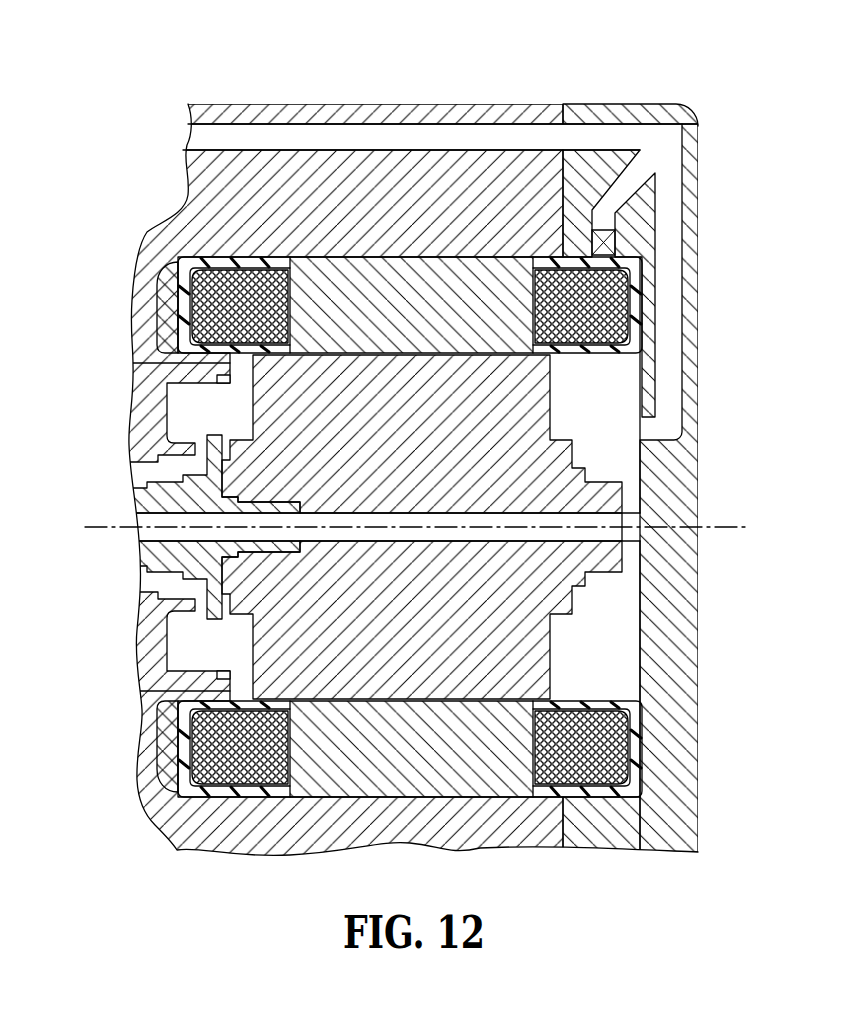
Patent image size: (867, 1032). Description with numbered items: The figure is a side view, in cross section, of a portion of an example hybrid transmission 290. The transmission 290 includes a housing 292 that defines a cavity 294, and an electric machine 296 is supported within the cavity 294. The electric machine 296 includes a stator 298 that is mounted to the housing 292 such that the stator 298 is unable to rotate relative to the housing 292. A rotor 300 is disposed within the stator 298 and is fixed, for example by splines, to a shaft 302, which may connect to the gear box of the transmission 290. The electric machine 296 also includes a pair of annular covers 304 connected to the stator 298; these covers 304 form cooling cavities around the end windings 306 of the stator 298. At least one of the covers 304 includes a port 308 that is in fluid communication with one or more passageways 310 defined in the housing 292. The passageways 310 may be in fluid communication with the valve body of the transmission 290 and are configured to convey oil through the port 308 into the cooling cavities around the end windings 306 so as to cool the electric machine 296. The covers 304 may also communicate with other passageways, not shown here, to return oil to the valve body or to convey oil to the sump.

The hybrid transmission 290 is at (455, 427).
The housing 292 is at (292, 103).
The cavity 294 is at (600, 425).
The electric machine 296 is at (312, 651).
The stator 298 is at (413, 290).
The rotor 300 is at (324, 405).
The shaft 302 is at (152, 505).
The annular covers 304 is at (180, 300).
The end windings 306 is at (217, 257).
The port 308 is at (606, 232).
The passageways 310 is at (615, 138).